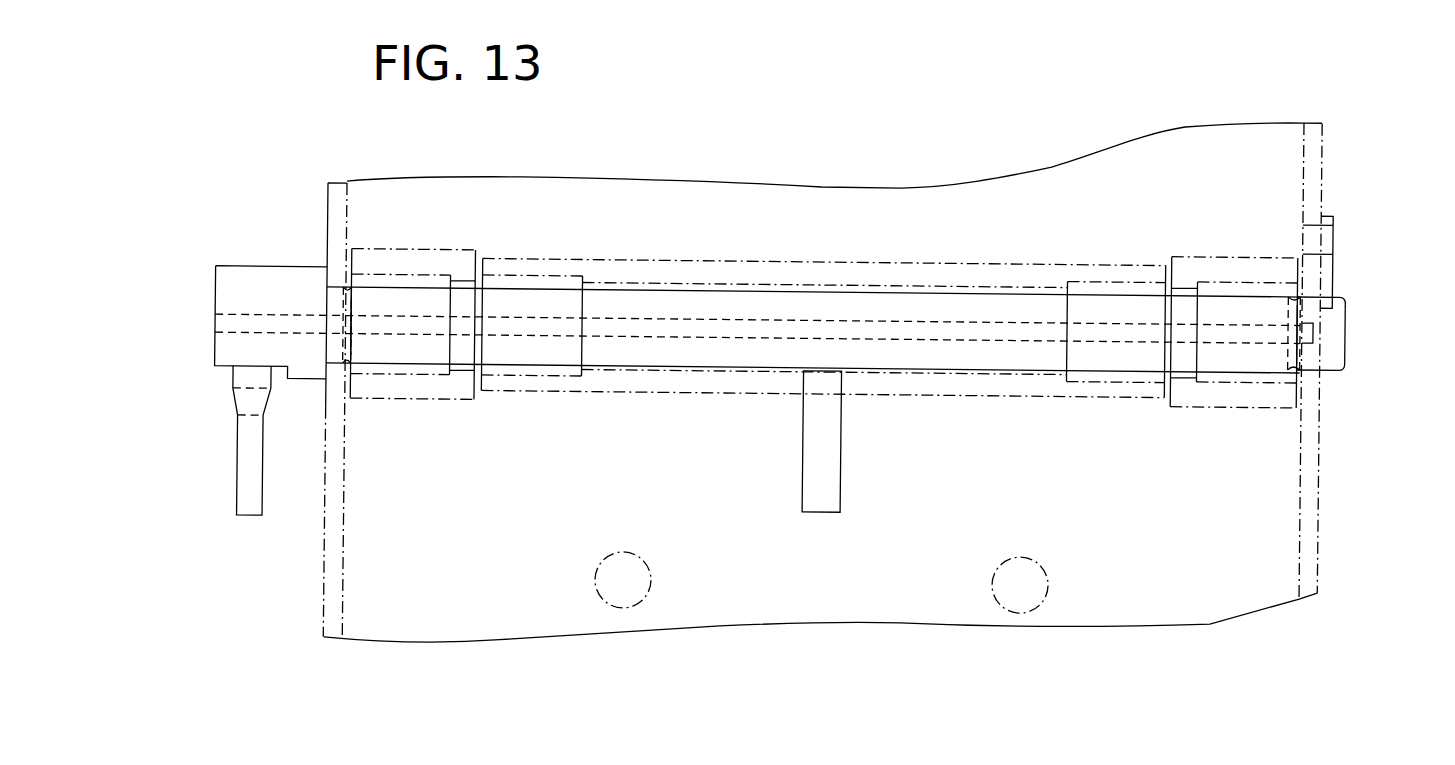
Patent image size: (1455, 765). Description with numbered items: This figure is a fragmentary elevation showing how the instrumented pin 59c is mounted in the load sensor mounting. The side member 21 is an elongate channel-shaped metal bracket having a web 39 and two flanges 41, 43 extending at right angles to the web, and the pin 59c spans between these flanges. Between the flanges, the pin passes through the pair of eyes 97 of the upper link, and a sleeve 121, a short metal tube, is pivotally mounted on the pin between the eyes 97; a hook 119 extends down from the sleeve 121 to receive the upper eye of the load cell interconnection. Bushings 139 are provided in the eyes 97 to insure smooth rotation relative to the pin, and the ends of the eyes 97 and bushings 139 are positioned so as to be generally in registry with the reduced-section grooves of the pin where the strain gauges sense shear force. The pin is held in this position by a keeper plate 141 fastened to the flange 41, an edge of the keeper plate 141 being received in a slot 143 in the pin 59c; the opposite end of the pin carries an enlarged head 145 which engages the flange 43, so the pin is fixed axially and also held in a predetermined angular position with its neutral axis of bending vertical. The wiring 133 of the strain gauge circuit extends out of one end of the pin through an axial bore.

The side member 21 is at (719, 634).
The web 39 is at (513, 645).
The flange 41 is at (1320, 191).
The flange 43 is at (326, 200).
The eyes 97 is at (406, 252).
The hook 119 is at (846, 460).
The sleeve 121 is at (805, 262).
The wiring 133 is at (240, 476).
The bushings 139 is at (526, 379).
The keeper plate 141 is at (1333, 272).
The slot 143 is at (1344, 304).
The enlarged head 145 is at (254, 271).
The pin 59c is at (1344, 340).